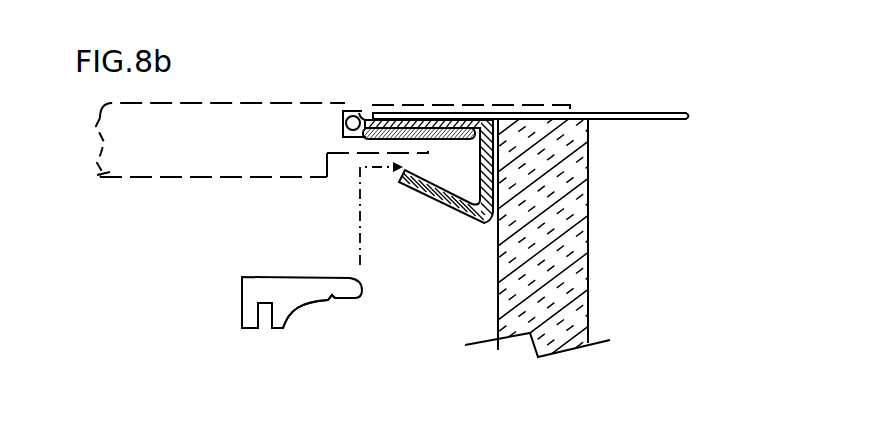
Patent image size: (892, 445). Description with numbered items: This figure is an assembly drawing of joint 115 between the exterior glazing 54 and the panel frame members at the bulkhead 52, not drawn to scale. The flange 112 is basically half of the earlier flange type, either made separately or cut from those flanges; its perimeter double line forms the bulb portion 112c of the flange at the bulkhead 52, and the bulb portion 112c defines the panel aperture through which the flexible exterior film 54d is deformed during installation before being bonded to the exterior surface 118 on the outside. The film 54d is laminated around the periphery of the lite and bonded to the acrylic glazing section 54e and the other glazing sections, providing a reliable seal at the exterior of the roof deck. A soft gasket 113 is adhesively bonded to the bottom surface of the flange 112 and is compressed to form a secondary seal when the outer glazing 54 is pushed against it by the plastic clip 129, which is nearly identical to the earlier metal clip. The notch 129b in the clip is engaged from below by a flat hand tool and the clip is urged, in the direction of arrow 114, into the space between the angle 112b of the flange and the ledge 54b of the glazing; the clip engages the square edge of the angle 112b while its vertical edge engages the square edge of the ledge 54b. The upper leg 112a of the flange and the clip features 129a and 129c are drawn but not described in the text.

The bulkhead 52 is at (552, 187).
The exterior glazing 54 is at (127, 162).
The ledge 54b is at (322, 157).
The exterior film 54d is at (535, 104).
The acrylic glazing section 54e is at (341, 124).
The flange 112 is at (396, 162).
The clip upper leg 112a is at (420, 122).
The angle 112b is at (426, 190).
The bulb portion of flange 112c is at (357, 112).
The soft gasket 113 is at (436, 139).
The arrow 114 is at (361, 213).
The joint 115 is at (733, 63).
The exterior surface 118 is at (666, 115).
The plastic clip 129 is at (301, 332).
The insert notch 129a is at (267, 322).
The notch 129b is at (293, 313).
The insert detent 129c is at (335, 298).